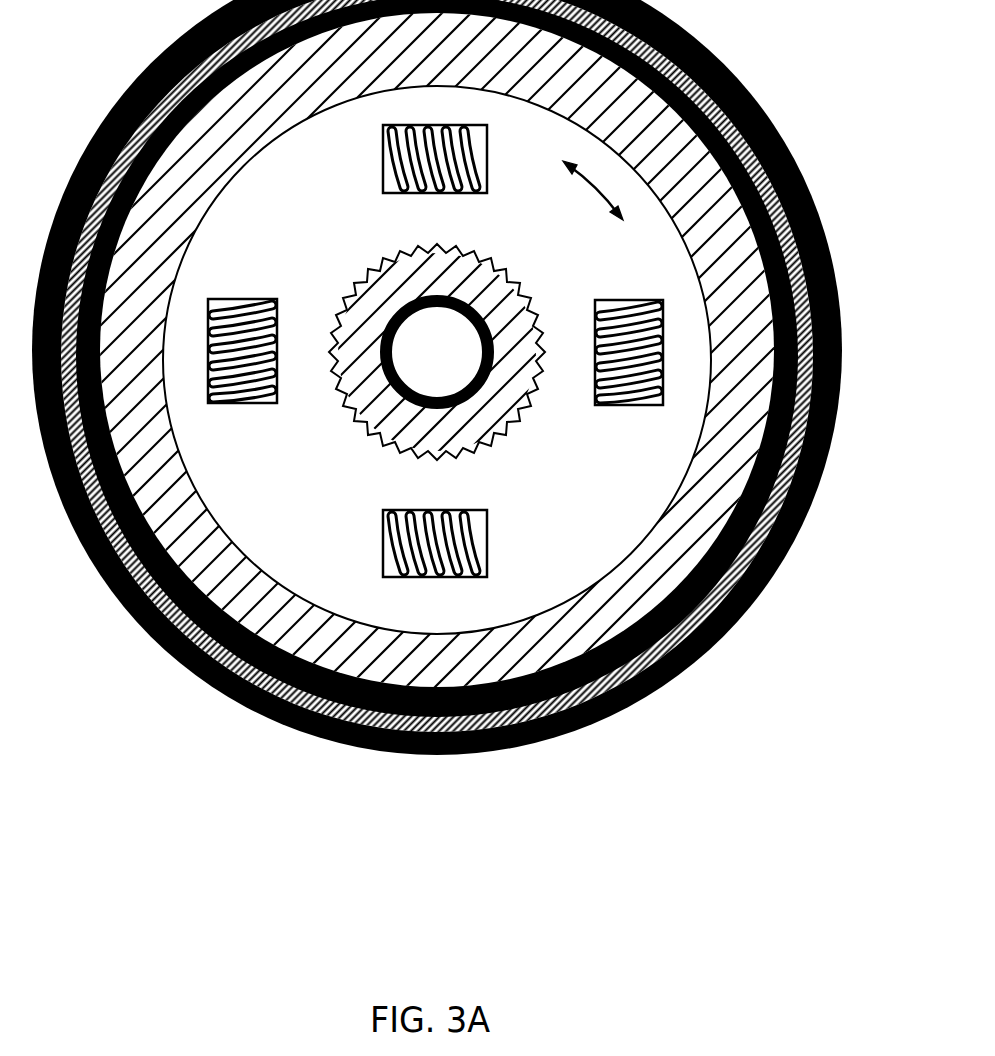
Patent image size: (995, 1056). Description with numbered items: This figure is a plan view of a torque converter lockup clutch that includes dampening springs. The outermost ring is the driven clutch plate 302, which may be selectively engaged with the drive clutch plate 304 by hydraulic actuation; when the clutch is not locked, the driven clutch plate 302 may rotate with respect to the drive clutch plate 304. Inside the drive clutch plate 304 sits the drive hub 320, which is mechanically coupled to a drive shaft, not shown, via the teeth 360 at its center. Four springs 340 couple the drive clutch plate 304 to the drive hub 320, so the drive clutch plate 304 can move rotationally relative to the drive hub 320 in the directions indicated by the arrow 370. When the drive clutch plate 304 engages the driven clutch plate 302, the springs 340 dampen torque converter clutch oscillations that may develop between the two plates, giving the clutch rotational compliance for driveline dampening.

The driven clutch plate 302 is at (592, 726).
The drive clutch plate 304 is at (323, 90).
The drive hub 320 is at (586, 549).
The springs 340 is at (383, 170).
The teeth 360 is at (380, 418).
The arrow 370 is at (593, 193).